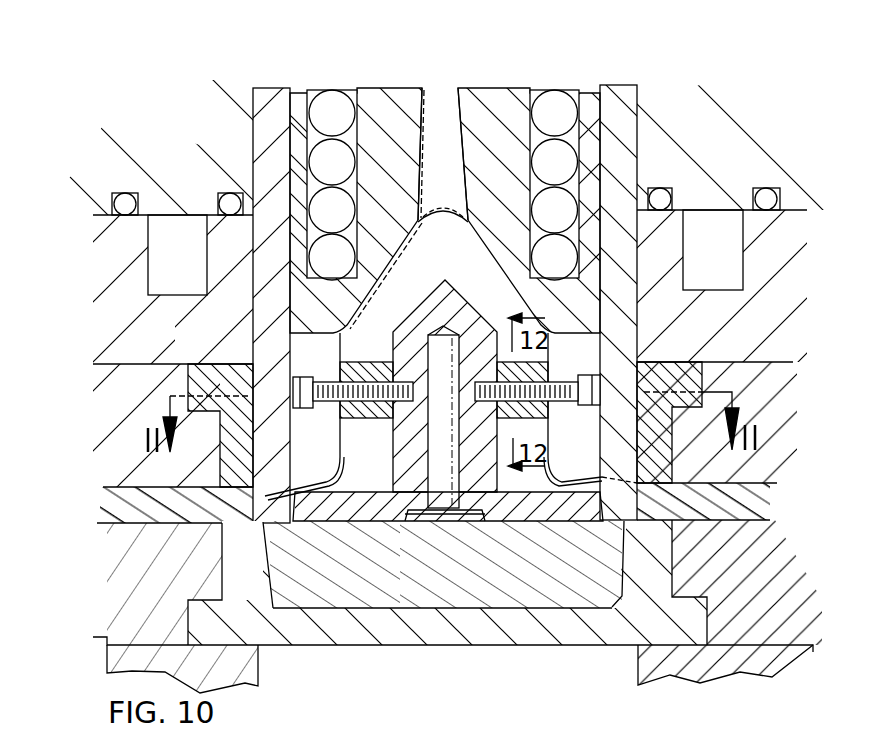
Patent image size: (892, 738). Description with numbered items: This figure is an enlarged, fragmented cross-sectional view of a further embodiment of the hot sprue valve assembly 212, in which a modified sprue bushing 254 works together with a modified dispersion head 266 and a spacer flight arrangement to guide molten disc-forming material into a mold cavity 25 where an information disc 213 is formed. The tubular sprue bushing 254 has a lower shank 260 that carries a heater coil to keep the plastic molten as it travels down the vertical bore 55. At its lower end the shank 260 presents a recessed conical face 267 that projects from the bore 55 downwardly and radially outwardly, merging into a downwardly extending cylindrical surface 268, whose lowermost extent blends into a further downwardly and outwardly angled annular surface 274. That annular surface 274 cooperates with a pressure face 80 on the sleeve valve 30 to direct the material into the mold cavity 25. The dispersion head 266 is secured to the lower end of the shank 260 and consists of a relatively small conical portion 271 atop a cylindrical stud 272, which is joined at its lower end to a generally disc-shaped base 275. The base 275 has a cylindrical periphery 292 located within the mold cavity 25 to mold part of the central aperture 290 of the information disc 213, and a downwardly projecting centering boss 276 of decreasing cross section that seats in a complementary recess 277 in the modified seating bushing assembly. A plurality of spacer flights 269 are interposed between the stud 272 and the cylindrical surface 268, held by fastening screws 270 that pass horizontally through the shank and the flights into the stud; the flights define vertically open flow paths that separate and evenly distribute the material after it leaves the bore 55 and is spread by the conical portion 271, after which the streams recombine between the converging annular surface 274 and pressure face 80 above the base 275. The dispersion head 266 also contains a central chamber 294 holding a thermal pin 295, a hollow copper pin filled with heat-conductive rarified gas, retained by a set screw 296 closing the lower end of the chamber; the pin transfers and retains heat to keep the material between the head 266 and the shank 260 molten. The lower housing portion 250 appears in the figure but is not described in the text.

The valve housing 212 is at (190, 138).
The housing body 30 is at (250, 323).
The valve stem 55 is at (426, 90).
The piston 254 is at (496, 106).
The spring 260 is at (588, 150).
The dome portion 267 is at (392, 266).
The bell wall 268 is at (365, 337).
The central hub 271 is at (450, 300).
The nut 269 is at (532, 372).
The bolt 270 is at (590, 382).
The flexible lip 80 is at (302, 488).
The bolt 274 is at (340, 468).
The guide rod 295 is at (440, 422).
The retaining block 272 is at (405, 461).
The seal chamber 25 is at (100, 508).
The seal plate 213 is at (150, 522).
The passage 290 is at (260, 522).
The piston plate 266 is at (378, 524).
The plate surface 296 is at (392, 505).
The seat 294 is at (457, 452).
The insert 277 is at (492, 522).
The lip 275 is at (540, 512).
The cup wall 276 is at (598, 521).
The lower housing portion 292 is at (625, 503).
The lower housing 250 is at (406, 600).